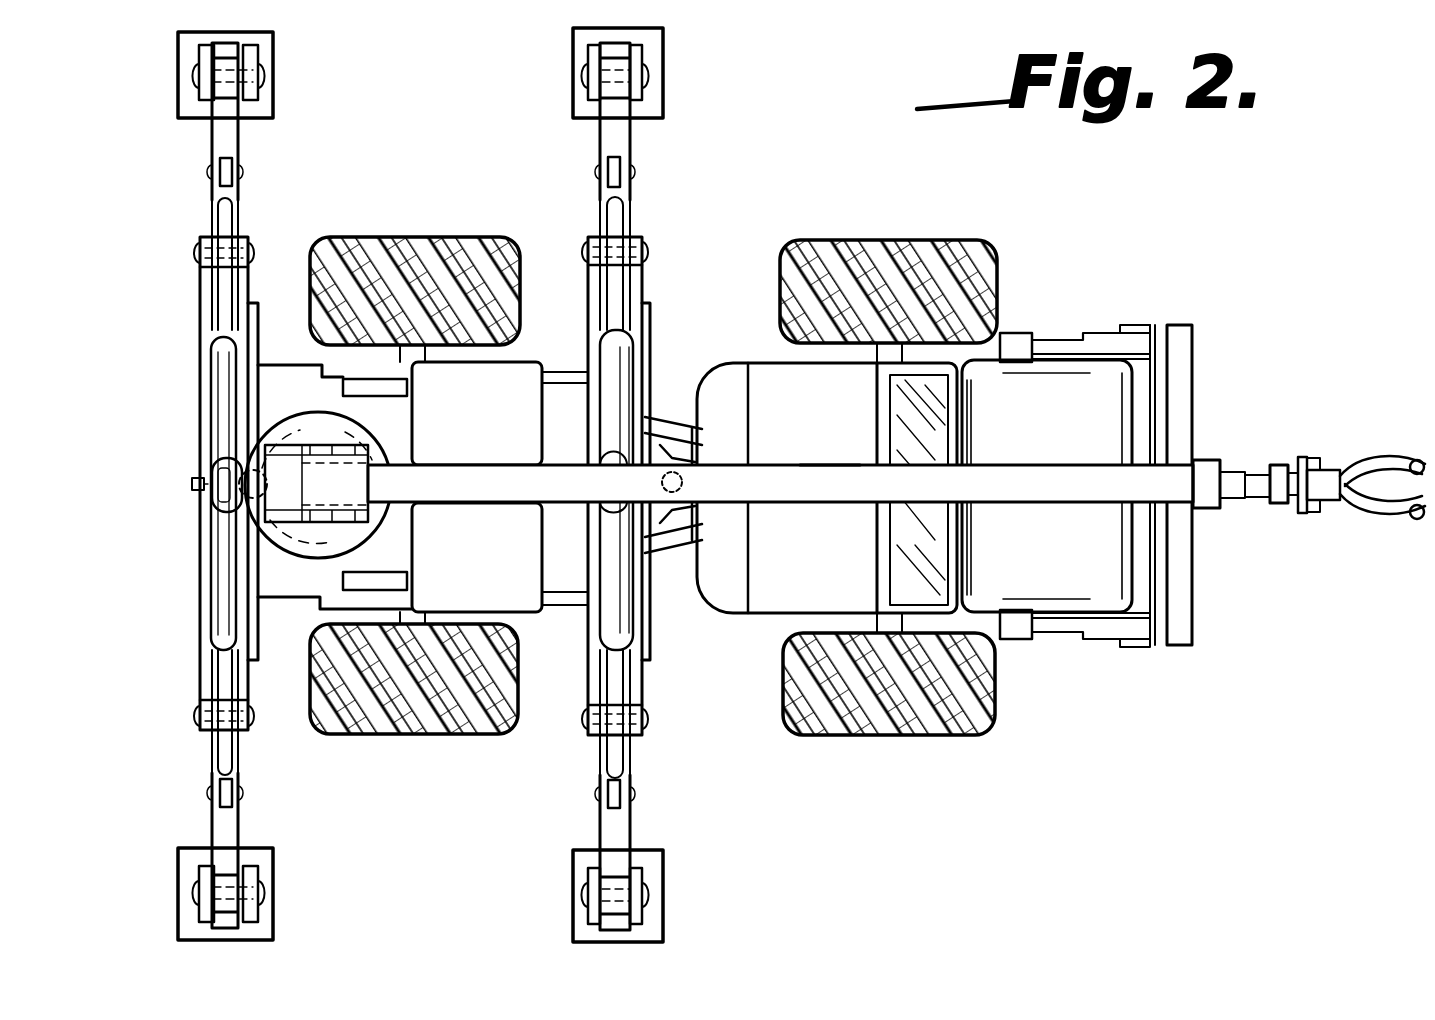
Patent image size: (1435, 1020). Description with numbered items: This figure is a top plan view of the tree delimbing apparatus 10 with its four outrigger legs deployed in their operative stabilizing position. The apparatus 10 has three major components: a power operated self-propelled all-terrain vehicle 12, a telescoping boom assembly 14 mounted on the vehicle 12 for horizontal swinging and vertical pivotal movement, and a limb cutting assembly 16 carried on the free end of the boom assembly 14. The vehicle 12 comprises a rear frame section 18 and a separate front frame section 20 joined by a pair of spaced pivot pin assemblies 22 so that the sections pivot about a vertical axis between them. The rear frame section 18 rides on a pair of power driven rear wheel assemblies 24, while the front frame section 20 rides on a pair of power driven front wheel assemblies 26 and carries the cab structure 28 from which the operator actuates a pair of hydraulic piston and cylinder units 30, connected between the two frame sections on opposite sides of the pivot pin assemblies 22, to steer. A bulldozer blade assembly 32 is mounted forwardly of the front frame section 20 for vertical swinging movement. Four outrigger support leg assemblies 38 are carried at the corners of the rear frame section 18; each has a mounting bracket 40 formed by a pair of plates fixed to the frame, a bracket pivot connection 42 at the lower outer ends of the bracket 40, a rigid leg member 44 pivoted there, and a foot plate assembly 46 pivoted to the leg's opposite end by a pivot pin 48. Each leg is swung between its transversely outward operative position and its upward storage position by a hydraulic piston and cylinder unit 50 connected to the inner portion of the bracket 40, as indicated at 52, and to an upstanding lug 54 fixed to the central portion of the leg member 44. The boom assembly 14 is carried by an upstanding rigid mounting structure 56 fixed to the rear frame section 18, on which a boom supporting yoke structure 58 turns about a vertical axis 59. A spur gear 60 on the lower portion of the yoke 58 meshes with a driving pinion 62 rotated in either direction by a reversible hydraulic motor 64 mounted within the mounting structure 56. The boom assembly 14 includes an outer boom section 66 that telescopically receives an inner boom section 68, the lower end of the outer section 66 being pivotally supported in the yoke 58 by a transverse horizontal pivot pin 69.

The tree delimbing apparatus 10 is at (1040, 296).
The power operated self-propelled all-terrain vehicle 12 is at (727, 352).
The telescoping boom assembly 14 is at (852, 428).
The limb cutting assembly 16 is at (1378, 452).
The rear frame section 18 is at (570, 590).
The front frame section 20 is at (733, 602).
The pivot pin assemblies 22 is at (700, 457).
The rear wheel assemblies 24 is at (385, 735).
The front wheel assemblies 26 is at (972, 246).
The cab structure 28 is at (940, 438).
The hydraulic piston and cylinder units 30 is at (668, 418).
The bulldozer blade assembly 32 is at (1192, 579).
The outrigger support leg assemblies 38 is at (250, 153).
The mounting bracket 40 is at (240, 310).
The bracket bolt 42 is at (253, 250).
The leg member 44 is at (218, 143).
The foot plate assembly 46 is at (273, 104).
The pivot pin 48 is at (262, 76).
The hydraulic piston and cylinder unit 50 is at (217, 408).
The connection to mounting bracket 52 is at (192, 486).
The upstanding lug 54 is at (213, 174).
The rigid mounting structure 56 is at (392, 442).
The boom supporting yoke structure 58 is at (318, 505).
The vertical axis 59 is at (370, 487).
The spur gear 60 is at (400, 389).
The driving pinion 62 is at (335, 481).
The reversible hydraulic motor 64 is at (240, 520).
The outer boom section 66 is at (530, 466).
The inner boom section 68 is at (1258, 478).
The transverse horizontal pivot pin 69 is at (400, 541).